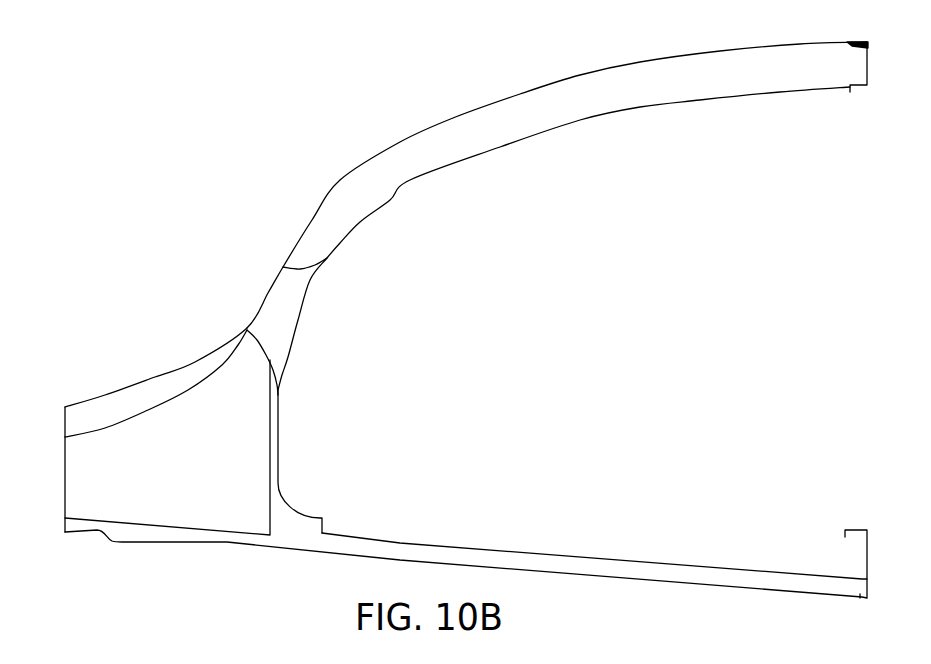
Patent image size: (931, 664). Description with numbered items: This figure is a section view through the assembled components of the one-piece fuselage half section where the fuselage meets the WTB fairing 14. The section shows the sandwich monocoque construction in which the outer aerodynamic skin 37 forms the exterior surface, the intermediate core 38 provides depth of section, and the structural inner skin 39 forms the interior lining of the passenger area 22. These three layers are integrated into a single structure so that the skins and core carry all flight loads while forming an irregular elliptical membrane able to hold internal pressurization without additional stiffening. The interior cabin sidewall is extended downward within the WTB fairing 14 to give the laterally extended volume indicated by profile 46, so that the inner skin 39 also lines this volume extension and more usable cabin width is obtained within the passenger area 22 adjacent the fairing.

The WTB fairing 14 is at (193, 362).
The passenger area 22 is at (457, 500).
The outer aerodynamic skin 37 is at (453, 118).
The intermediate core 38 is at (362, 193).
The structural inner skin 39 is at (360, 223).
The profile 46 is at (285, 495).